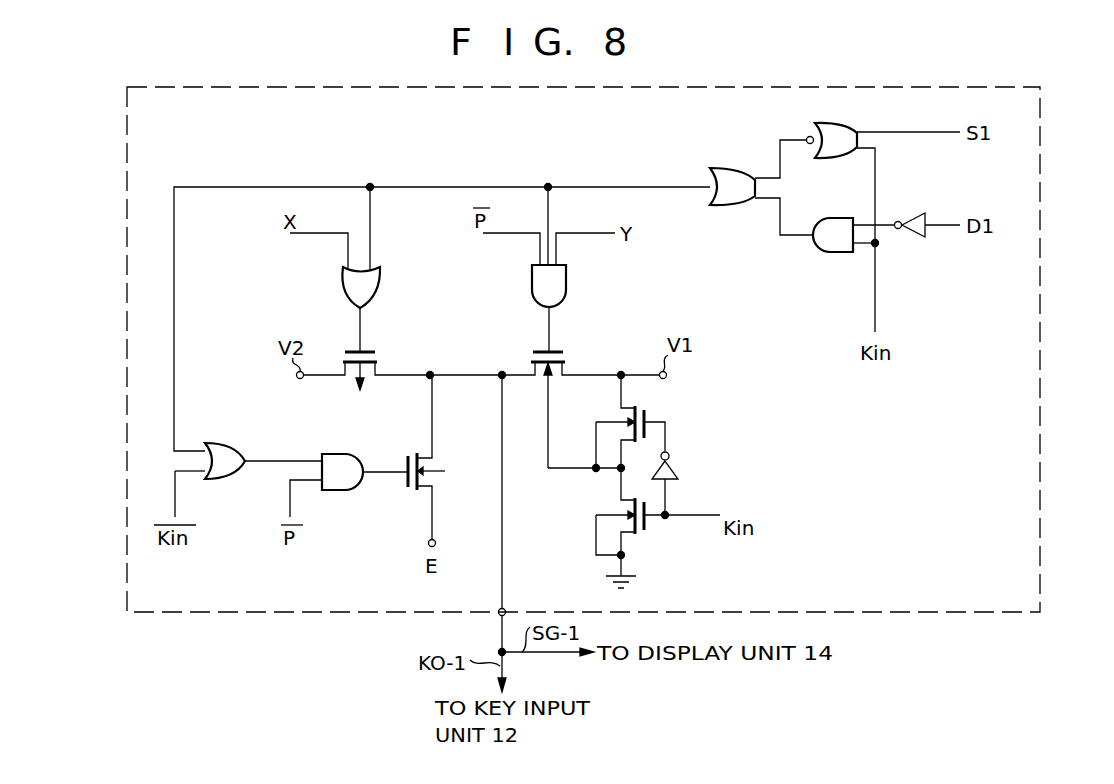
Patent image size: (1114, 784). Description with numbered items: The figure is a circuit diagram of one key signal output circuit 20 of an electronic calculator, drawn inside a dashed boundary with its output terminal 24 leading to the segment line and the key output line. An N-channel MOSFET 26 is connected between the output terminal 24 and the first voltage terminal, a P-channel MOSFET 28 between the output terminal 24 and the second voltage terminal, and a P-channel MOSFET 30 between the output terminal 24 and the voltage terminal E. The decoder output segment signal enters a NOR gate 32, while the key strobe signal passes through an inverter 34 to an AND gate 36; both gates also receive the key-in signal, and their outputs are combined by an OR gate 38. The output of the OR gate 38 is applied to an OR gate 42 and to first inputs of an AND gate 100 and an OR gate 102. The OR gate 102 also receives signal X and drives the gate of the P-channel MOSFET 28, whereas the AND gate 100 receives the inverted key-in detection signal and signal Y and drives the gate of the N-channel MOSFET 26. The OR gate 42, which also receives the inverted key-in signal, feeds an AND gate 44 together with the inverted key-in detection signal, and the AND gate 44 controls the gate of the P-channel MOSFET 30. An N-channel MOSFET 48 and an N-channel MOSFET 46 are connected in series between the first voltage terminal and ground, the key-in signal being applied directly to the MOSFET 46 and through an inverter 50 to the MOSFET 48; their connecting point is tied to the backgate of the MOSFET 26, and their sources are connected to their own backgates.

The key signal output circuit 20 is at (1042, 292).
The output terminal 24 is at (506, 608).
The N-channel MOSFET 26 is at (565, 358).
The P-channel MOSFET 28 is at (380, 358).
The P-channel MOSFET 30 is at (428, 462).
The NOR gate 32 is at (838, 125).
The inverter 34 is at (917, 214).
The AND gate 36 is at (828, 218).
The OR gate 38 is at (734, 168).
The OR gate 42 is at (219, 452).
The AND gate 44 is at (352, 457).
The N-channel MOSFET 46 is at (632, 550).
The N-channel MOSFET 48 is at (640, 402).
The inverter 50 is at (678, 472).
The AND gate 100 is at (564, 292).
The OR gate 102 is at (378, 290).